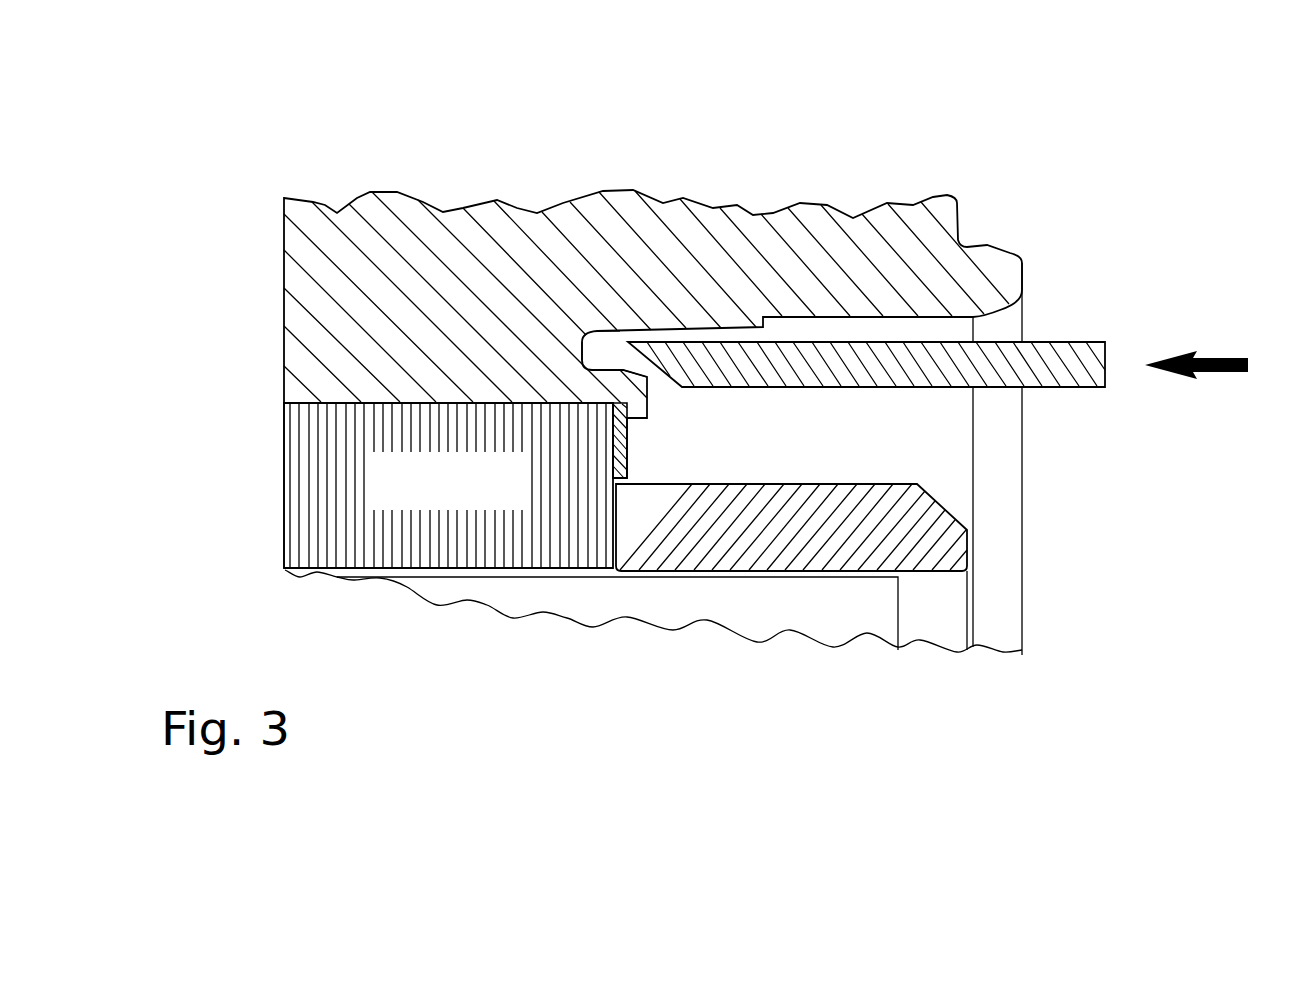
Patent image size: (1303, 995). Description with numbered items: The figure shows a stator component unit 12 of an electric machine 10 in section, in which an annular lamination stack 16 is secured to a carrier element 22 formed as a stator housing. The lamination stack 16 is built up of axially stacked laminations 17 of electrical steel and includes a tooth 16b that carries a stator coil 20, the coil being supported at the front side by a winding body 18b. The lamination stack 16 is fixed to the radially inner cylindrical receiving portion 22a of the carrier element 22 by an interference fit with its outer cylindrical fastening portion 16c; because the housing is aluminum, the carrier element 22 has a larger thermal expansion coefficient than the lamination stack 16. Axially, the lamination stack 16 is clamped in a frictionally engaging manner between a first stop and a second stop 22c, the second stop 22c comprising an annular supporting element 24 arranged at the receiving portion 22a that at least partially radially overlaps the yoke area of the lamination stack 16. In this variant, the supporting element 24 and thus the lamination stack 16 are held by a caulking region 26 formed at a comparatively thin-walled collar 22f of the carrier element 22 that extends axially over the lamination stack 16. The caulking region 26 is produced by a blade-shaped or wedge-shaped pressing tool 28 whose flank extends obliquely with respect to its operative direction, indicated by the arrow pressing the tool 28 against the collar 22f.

The electric machine 10 is at (1038, 137).
The stator component unit 12 is at (245, 325).
The lamination stack 16 is at (448, 485).
The tooth 16b is at (500, 497).
The outer cylindrical fastening portion 16c is at (388, 405).
The laminations 17 is at (326, 507).
The winding body 18b is at (1022, 505).
The stator coil 20 is at (860, 615).
The carrier element 22 is at (565, 244).
The receiving portion 22a is at (458, 396).
The second stop 22c is at (615, 443).
The collar 22f is at (608, 390).
The supporting element 24 is at (560, 350).
The caulking region 26 is at (615, 357).
The pressing tool 28 is at (1078, 363).